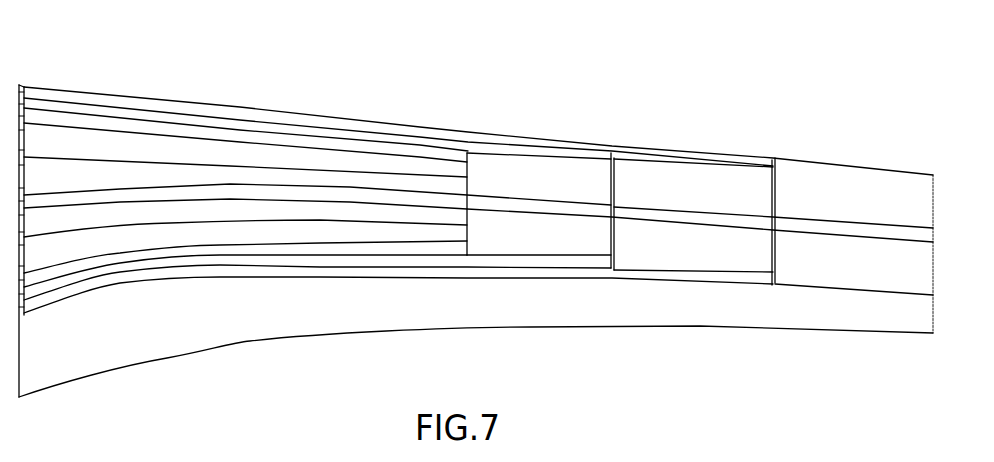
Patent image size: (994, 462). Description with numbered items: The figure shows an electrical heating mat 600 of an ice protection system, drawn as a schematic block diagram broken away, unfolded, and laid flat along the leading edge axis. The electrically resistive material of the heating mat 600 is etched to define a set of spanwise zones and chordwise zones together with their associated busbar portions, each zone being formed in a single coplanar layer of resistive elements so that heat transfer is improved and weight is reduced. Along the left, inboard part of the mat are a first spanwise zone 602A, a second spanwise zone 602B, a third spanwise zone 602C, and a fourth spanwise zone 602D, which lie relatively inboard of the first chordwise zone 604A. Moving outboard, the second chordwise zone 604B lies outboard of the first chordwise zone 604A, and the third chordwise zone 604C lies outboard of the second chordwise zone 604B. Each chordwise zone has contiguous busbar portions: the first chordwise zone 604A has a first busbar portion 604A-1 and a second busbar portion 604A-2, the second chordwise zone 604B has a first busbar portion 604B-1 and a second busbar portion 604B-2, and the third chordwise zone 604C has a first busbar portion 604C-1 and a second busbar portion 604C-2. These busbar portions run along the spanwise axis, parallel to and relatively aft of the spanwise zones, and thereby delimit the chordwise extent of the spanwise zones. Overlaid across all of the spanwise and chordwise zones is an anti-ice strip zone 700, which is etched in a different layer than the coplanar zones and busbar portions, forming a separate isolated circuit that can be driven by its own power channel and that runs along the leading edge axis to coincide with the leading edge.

The electrical heating mat 600 is at (719, 86).
The first spanwise zone 602A is at (80, 186).
The second spanwise zone 602B is at (70, 231).
The third spanwise zone 602C is at (85, 154).
The fourth spanwise zone 602D is at (72, 264).
The first chordwise zone 604A is at (525, 239).
The second chordwise zone 604B is at (678, 249).
The third chordwise zone 604C is at (840, 264).
The first busbar portion 604A-1 is at (350, 149).
The first busbar portion 604B-1 is at (402, 138).
The first busbar portion 604C-1 is at (475, 136).
The second busbar portion 604A-2 is at (303, 252).
The second busbar portion 604B-2 is at (355, 262).
The second busbar portion 604C-2 is at (415, 272).
The anti-ice strip zone 700 is at (548, 211).